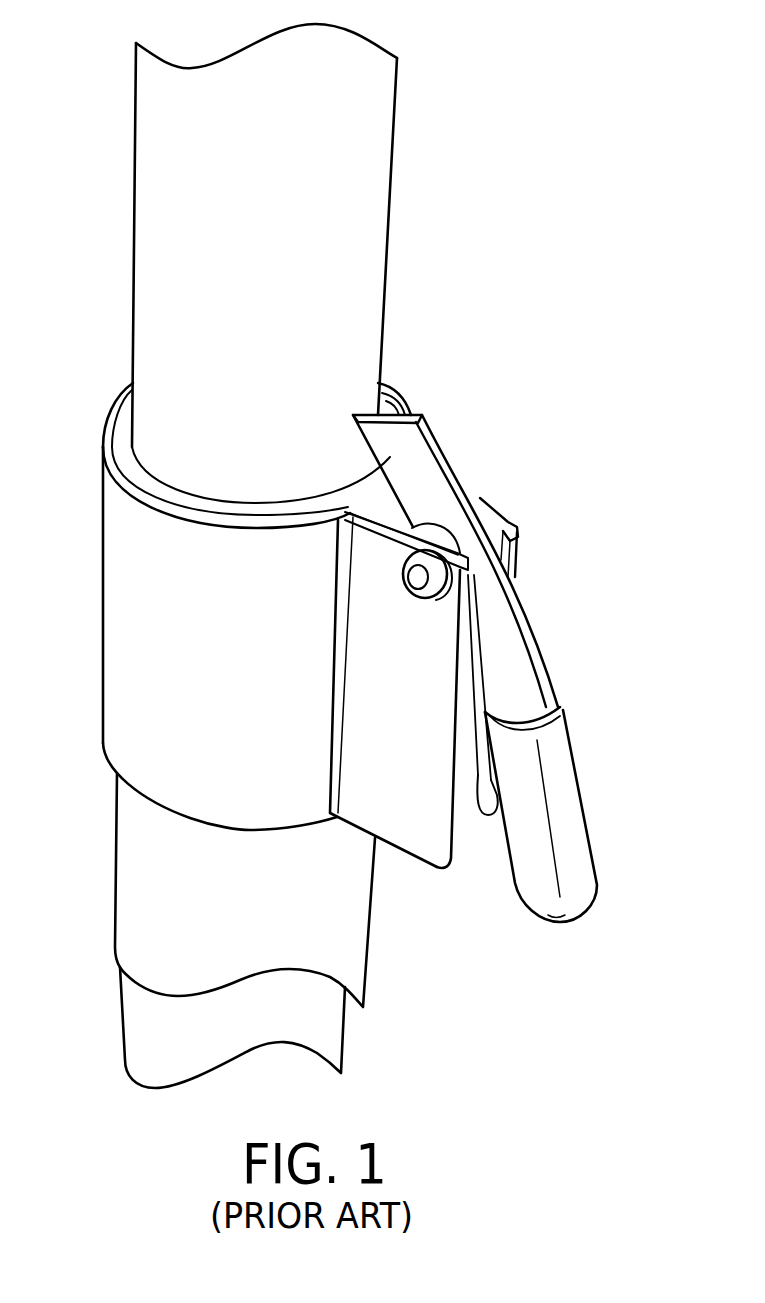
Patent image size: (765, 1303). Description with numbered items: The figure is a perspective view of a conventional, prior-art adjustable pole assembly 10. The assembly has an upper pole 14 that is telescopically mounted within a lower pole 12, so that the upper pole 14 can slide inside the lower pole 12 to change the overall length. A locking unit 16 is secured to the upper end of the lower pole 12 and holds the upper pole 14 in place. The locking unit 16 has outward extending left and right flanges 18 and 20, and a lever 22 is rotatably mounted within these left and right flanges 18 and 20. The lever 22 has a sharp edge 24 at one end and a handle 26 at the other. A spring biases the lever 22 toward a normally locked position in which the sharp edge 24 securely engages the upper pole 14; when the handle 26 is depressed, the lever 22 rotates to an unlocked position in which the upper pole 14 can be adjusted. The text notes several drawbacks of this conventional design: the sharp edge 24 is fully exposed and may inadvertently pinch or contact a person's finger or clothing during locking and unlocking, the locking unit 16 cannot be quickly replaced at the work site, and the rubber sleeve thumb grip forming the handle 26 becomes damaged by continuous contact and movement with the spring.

The adjustable pole assembly 10 is at (528, 1020).
The lower pole 12 is at (115, 874).
The upper pole 14 is at (132, 222).
The locking unit 16 is at (528, 519).
The left flange 18 is at (418, 843).
The right flange 20 is at (519, 546).
The lever 22 is at (553, 670).
The sharp edge 24 is at (398, 395).
The handle 26 is at (568, 802).